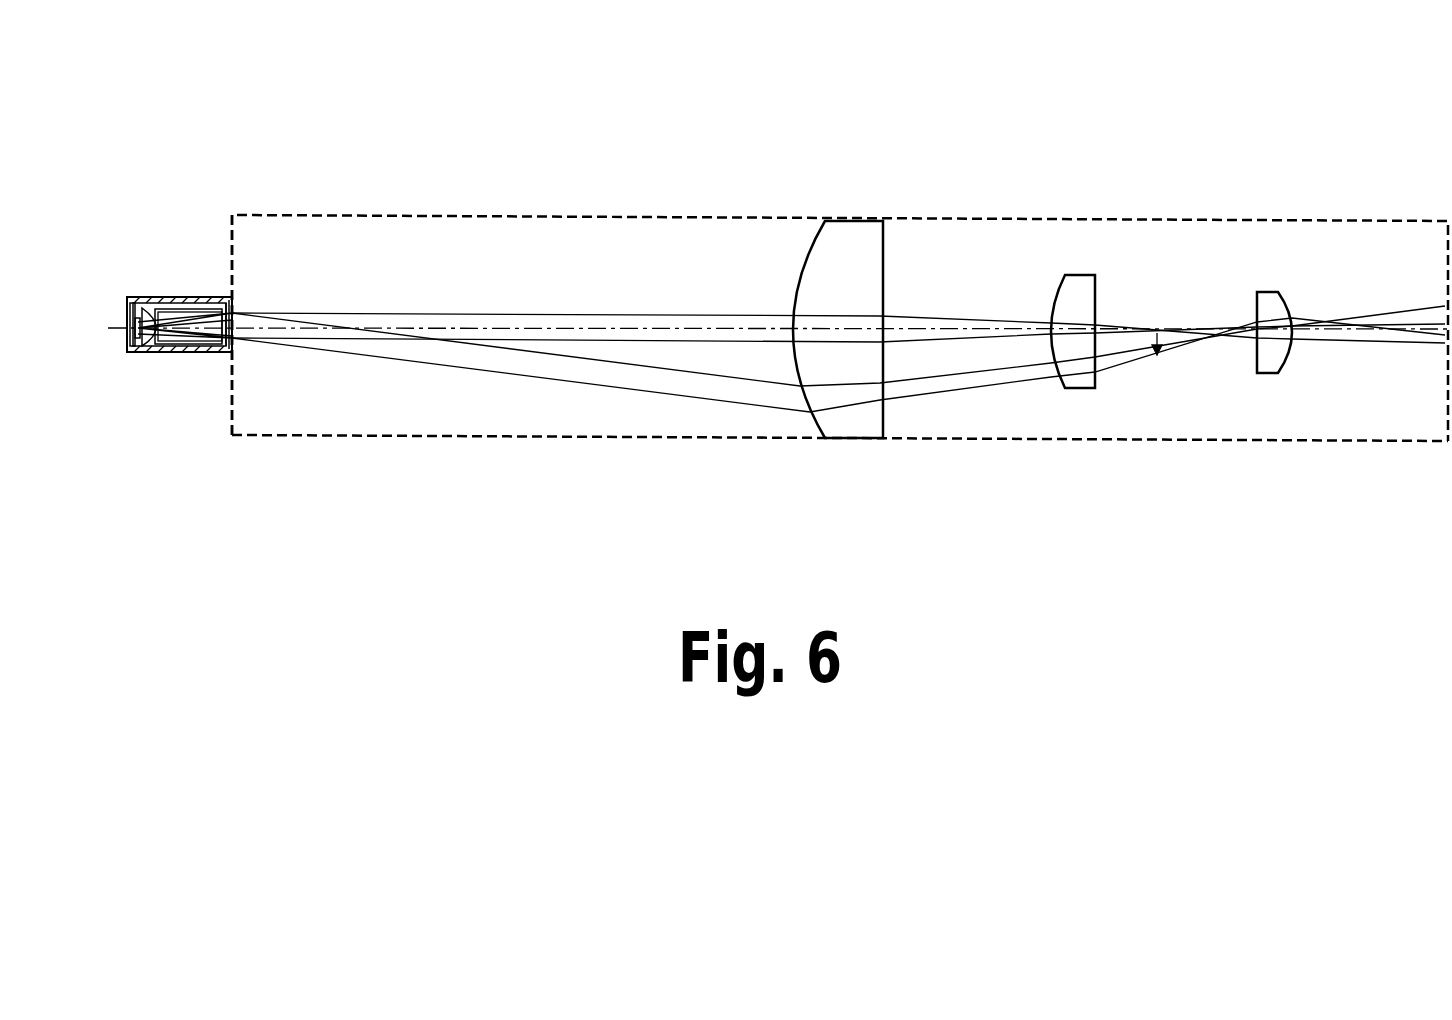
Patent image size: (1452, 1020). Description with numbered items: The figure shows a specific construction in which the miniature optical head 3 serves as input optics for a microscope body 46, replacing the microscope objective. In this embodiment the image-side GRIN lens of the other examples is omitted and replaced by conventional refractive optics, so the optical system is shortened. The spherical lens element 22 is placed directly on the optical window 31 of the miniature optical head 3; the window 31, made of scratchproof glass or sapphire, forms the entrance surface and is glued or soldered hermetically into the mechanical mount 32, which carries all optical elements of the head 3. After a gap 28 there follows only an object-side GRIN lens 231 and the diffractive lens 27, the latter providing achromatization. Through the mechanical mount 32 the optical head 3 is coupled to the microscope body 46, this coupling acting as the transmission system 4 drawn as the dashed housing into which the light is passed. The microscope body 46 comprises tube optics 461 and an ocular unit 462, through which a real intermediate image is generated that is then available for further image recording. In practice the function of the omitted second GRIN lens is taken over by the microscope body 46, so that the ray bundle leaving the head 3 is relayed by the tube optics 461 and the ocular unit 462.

The miniature optical head 3 is at (259, 334).
The transmission system 4 is at (503, 218).
The spherical lens element 22 is at (140, 352).
The diffractive lens 27 is at (233, 222).
The gap 28 is at (152, 352).
The optical window 31 is at (130, 352).
The mechanical mount 32 is at (200, 352).
The microscope body 46 is at (1173, 442).
The object-side GRIN lens 231 is at (230, 208).
The tube optics 461 is at (855, 250).
The ocular unit 462 is at (1285, 270).